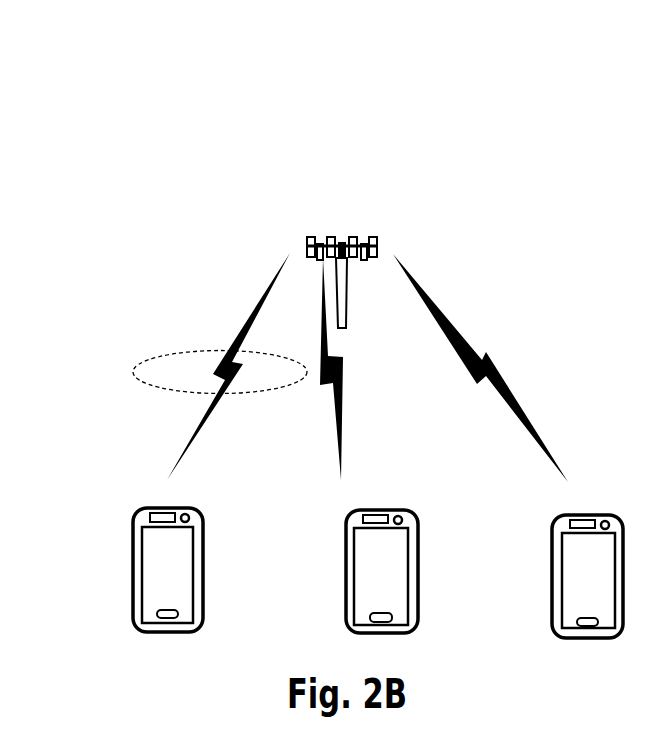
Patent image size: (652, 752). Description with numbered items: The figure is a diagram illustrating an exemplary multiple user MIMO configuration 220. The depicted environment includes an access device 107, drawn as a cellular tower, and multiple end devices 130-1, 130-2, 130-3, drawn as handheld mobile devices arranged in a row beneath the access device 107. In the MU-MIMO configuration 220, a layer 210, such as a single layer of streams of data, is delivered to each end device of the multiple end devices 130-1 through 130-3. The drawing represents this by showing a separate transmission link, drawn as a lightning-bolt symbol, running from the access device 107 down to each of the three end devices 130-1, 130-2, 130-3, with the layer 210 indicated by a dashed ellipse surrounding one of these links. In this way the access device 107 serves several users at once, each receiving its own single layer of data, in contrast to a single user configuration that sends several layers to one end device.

The MU-MIMO configuration 220 is at (221, 51).
The access device 107 is at (333, 237).
The layer 210 is at (155, 362).
The end device 130-1 is at (134, 573).
The end device 130-2 is at (347, 570).
The end device 130-3 is at (553, 573).